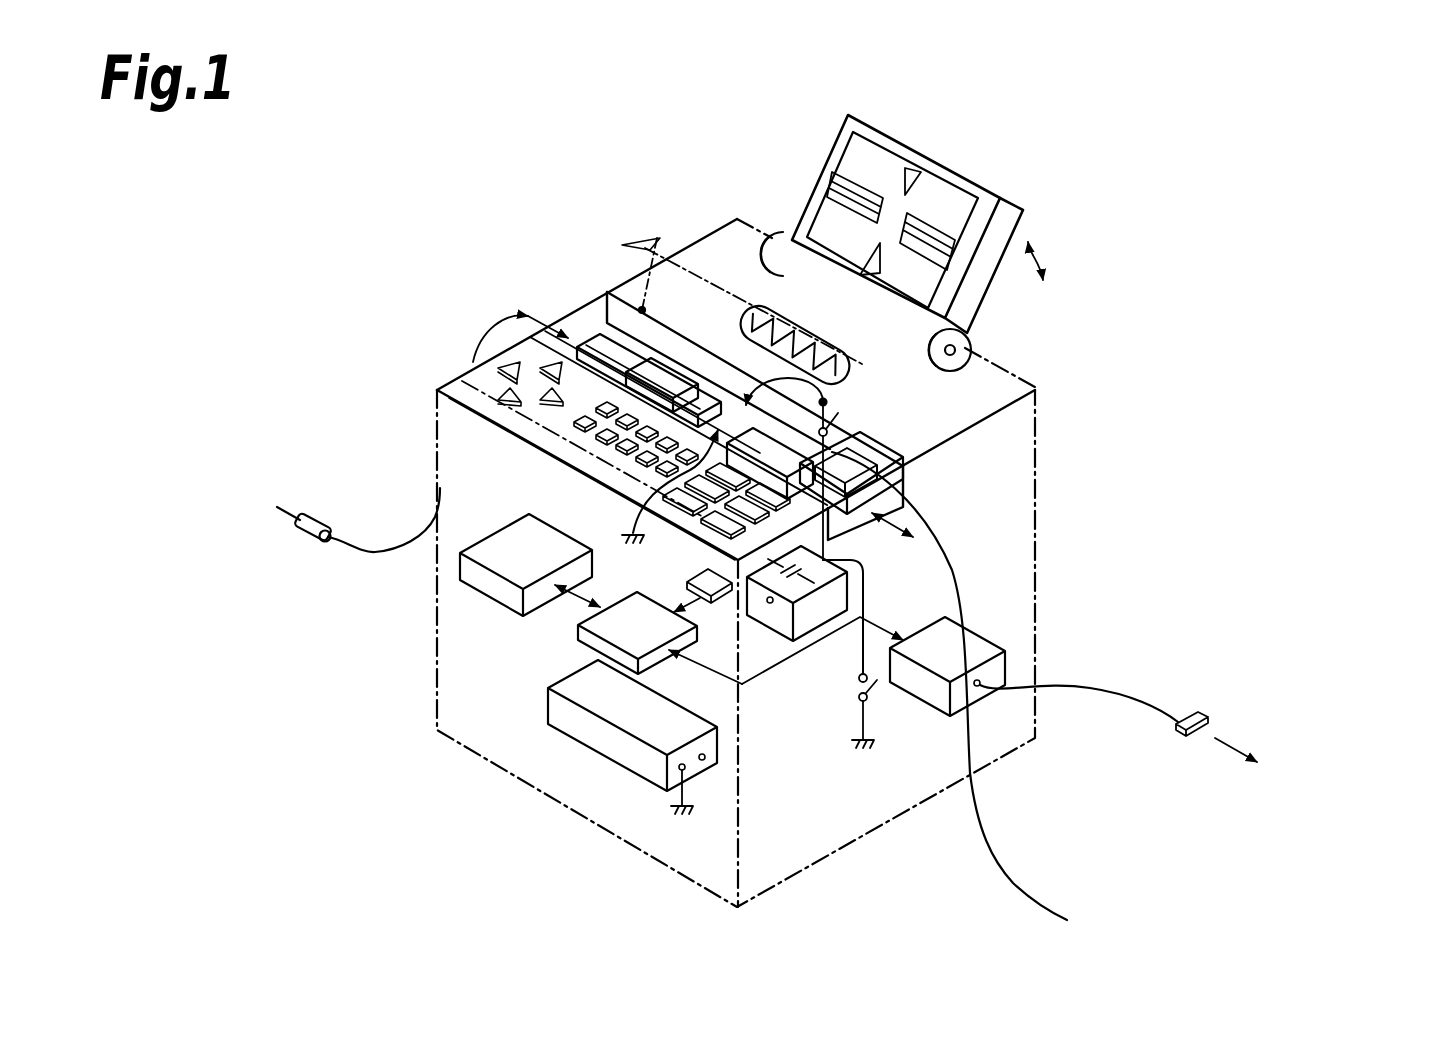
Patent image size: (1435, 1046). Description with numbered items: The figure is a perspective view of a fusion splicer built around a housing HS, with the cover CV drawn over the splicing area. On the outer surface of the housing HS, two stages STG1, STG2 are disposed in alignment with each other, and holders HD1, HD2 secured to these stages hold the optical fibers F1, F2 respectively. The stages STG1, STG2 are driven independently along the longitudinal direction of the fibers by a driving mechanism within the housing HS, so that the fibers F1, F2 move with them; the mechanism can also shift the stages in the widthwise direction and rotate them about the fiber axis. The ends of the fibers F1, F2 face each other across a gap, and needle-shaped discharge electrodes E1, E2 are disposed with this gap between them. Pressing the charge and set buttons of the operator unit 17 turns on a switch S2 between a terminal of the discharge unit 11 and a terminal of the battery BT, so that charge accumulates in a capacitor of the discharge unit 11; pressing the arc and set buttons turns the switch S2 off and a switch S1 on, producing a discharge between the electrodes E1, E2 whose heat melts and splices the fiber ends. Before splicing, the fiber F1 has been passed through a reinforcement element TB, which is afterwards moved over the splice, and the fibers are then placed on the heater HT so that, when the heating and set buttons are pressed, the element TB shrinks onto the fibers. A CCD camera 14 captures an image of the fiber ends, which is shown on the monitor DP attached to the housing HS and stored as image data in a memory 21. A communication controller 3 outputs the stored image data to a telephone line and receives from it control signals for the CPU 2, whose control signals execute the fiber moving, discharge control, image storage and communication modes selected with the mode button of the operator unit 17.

The housing HS is at (440, 705).
The operator unit 17 is at (466, 374).
The cover CV is at (622, 245).
The stage STG1 is at (593, 347).
The holder HD1 is at (668, 368).
The holder HD2 is at (830, 458).
The stage STG2 is at (868, 495).
The heater HT is at (850, 357).
The discharge electrode E2 is at (746, 400).
The switch S1 is at (832, 413).
The discharge electrode E1 is at (645, 466).
The monitor DP is at (893, 133).
The optical fiber F1 is at (292, 507).
The reinforcement element TB is at (312, 537).
The memory 21 is at (505, 600).
The CPU 2 is at (588, 633).
The CCD camera 14 is at (690, 580).
The battery BT is at (568, 737).
The discharge unit 11 is at (810, 635).
The switch S2 is at (872, 700).
The communication controller 3 is at (975, 635).
The optical fiber F2 is at (1007, 880).